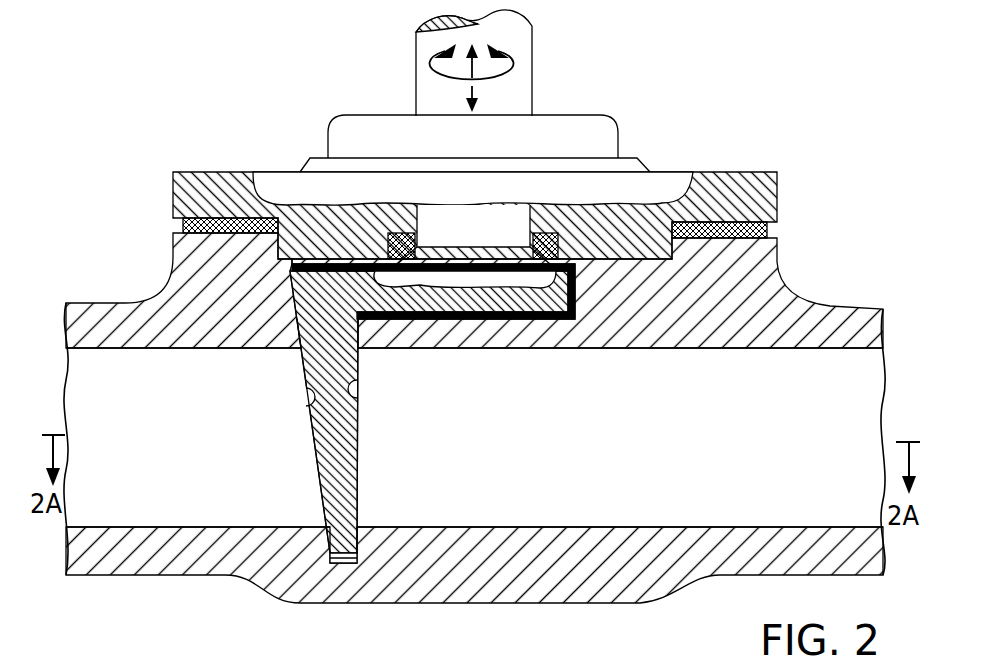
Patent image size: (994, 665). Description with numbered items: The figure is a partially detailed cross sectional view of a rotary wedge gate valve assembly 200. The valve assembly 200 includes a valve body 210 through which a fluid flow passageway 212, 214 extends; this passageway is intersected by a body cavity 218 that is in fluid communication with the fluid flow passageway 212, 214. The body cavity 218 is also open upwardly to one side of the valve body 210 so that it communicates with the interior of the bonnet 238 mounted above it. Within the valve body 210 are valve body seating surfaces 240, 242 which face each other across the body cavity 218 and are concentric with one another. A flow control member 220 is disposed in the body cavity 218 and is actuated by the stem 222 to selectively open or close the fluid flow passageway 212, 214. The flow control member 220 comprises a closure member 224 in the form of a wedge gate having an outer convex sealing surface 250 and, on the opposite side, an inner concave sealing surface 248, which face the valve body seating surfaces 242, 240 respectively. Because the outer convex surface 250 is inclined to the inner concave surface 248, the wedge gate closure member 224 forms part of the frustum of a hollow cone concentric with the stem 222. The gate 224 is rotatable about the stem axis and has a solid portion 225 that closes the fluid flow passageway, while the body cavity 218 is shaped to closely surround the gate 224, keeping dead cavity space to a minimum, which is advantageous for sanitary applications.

The valve assembly 200 is at (708, 141).
The stem 222 is at (539, 87).
The body cavity 218 is at (308, 264).
The bonnet 238 is at (781, 205).
The closure member 224 is at (327, 290).
The valve body 210 is at (792, 283).
The flow control member 220 is at (477, 279).
The fluid flow passageway 214 is at (130, 444).
The fluid flow passageway 212 is at (857, 458).
The valve body seating surface 242 is at (310, 412).
The valve body seating surface 240 is at (360, 402).
The outer convex sealing surface 250 is at (317, 452).
The inner concave sealing surface 248 is at (359, 448).
The solid portion 225 is at (340, 500).